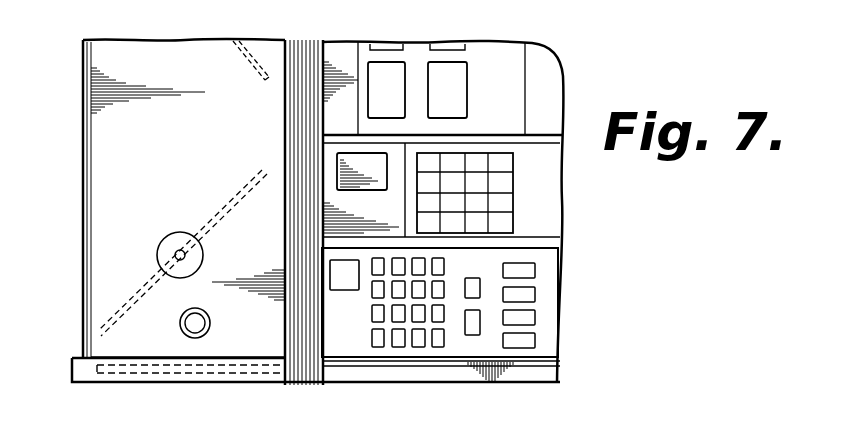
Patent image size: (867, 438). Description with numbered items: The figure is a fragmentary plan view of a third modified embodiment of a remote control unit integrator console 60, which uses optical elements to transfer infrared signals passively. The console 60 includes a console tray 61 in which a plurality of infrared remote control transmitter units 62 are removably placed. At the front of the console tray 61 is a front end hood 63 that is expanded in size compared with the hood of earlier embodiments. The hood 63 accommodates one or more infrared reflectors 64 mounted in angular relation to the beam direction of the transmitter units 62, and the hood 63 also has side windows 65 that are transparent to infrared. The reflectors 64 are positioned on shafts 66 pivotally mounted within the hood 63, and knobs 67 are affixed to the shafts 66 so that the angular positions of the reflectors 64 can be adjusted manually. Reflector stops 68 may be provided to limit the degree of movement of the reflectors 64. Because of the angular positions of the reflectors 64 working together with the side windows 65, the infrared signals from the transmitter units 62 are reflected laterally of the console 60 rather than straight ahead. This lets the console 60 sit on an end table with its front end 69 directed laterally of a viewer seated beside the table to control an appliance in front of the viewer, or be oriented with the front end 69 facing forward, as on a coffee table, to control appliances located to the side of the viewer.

The remote control unit integrator console 60 is at (100, 23).
The console tray 61 is at (387, 386).
The infrared remote control transmitter units 62 is at (555, 73).
The front end hood 63 is at (188, 48).
The infrared reflectors 64 is at (257, 56).
The side windows 65 is at (160, 384).
The shafts 66 is at (186, 260).
The knobs 67 is at (158, 243).
The reflector stops 68 is at (104, 304).
The front end 69 is at (82, 209).